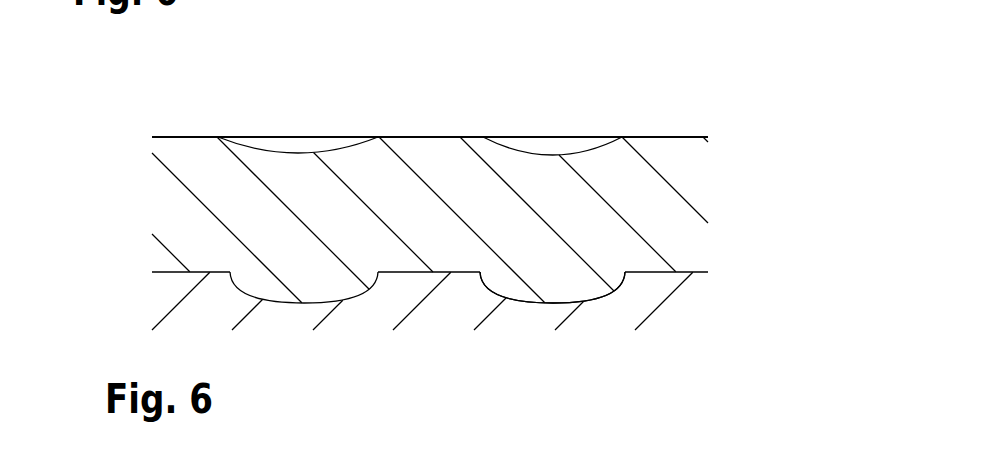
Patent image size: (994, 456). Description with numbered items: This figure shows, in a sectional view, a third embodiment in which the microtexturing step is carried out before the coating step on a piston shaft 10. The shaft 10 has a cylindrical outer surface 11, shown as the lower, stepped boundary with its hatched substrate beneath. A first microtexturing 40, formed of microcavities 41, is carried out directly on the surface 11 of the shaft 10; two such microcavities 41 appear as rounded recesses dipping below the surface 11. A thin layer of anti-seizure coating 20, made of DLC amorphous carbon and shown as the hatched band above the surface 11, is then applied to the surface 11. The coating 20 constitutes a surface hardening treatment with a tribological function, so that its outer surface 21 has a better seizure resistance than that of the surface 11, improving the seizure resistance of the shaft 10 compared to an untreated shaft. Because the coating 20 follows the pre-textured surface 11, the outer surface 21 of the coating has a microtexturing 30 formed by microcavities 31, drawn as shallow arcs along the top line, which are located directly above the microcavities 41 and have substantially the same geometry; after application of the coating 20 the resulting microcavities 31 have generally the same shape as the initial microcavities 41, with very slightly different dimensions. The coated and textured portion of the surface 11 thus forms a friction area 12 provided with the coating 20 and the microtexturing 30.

The piston shaft 10 is at (143, 313).
The cylindrical outer surface 11 is at (197, 272).
The friction area 12 is at (188, 97).
The anti-seizure coating 20 is at (728, 200).
The outer surface of the coating 21 is at (430, 137).
The microtexturing 30 is at (617, 88).
The microcavities 31 is at (307, 137).
The first microtexturing 40 is at (630, 252).
The microcavities 41 is at (311, 298).